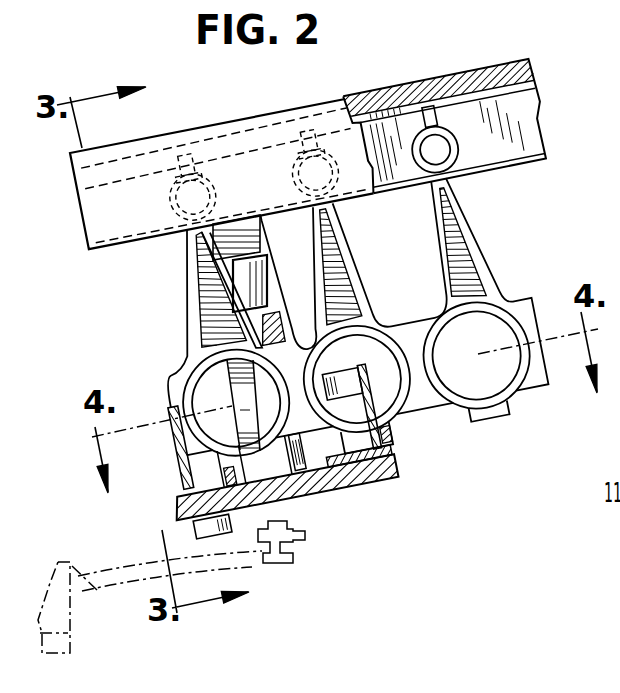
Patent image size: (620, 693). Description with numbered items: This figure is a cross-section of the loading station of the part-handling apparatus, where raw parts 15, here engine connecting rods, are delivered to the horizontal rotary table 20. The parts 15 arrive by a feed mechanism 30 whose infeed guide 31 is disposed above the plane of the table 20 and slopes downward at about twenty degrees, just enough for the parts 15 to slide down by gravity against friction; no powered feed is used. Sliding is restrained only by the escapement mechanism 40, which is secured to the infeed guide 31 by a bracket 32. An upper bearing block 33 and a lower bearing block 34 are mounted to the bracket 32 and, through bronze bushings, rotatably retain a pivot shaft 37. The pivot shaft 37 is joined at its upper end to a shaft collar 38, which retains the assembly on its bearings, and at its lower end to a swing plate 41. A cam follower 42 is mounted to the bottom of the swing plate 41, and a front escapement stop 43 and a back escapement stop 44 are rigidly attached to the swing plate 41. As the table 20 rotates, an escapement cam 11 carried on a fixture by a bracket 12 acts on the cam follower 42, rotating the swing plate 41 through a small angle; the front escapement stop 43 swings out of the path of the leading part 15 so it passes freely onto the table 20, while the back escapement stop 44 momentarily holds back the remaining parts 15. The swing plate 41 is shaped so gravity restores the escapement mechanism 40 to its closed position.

The escapement cam 11 is at (306, 532).
The bracket 12 is at (250, 568).
The parts 15 is at (193, 287).
The horizontal table 20 is at (67, 642).
The feed mechanism 30 is at (374, 88).
The infeed guide 31 is at (248, 114).
The bracket 32 is at (225, 242).
The upper bearing block 33 is at (247, 295).
The lower bearing block 34 is at (290, 462).
The pivot shaft 37 is at (284, 312).
The shaft collar 38 is at (257, 252).
The escapement mechanism 40 is at (366, 487).
The swing plate 41 is at (393, 463).
The cam follower 42 is at (197, 530).
The front escapement stop 43 is at (170, 406).
The back escapement stop 44 is at (343, 367).